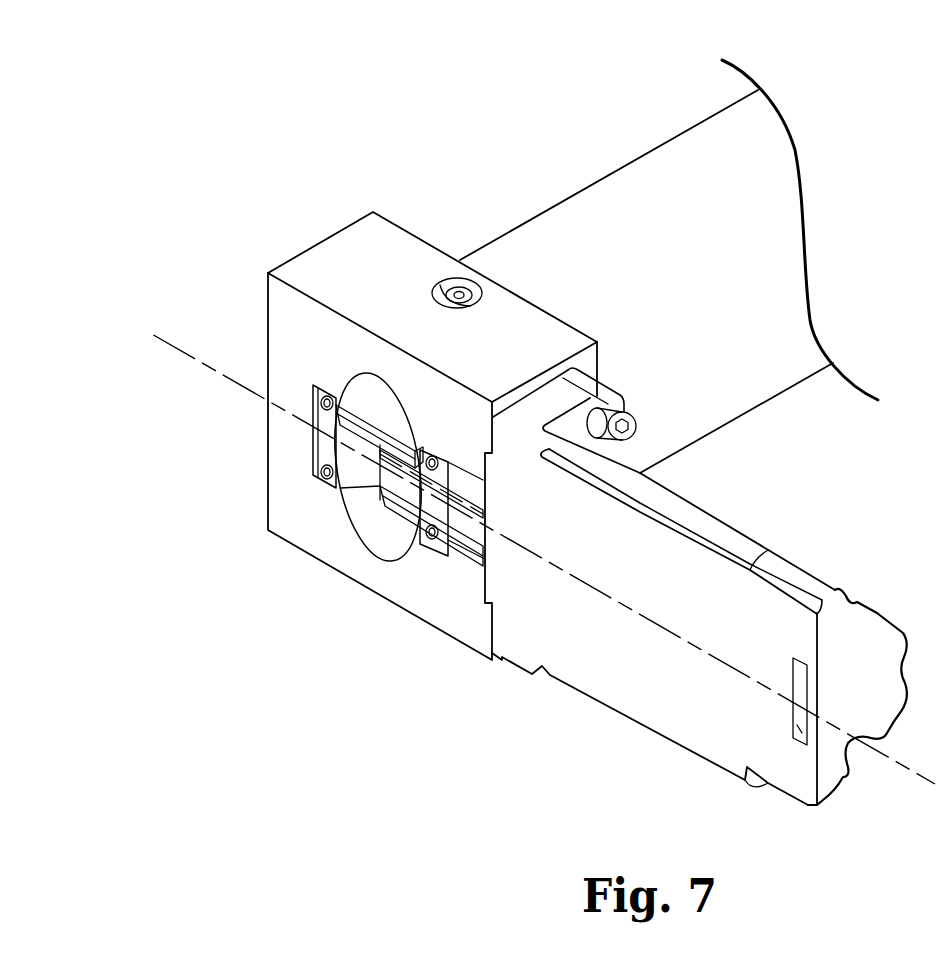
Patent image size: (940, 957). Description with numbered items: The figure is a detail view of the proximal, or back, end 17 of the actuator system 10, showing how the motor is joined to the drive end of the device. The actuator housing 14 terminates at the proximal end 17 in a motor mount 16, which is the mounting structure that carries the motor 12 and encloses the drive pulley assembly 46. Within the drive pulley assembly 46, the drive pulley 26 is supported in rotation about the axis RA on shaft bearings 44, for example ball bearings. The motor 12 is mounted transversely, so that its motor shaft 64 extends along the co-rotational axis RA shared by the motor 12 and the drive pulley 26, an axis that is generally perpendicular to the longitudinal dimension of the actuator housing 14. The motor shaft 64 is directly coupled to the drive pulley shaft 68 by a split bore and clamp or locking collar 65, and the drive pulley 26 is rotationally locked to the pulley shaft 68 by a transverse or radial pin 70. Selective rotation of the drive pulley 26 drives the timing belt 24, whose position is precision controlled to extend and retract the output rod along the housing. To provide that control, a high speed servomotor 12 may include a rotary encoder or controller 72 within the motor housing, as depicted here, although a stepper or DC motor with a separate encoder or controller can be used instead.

The actuator system 10 is at (275, 90).
The motor 12 is at (794, 567).
The actuator housing 14 is at (795, 387).
The motor mount 16 is at (362, 235).
The proximal end 17 is at (488, 80).
The timing belt 24 is at (393, 413).
The drive pulley 26 is at (340, 490).
The shaft bearings 44 is at (323, 478).
The drive pulley assembly 46 is at (300, 405).
The motor shaft 64 is at (413, 520).
The locking collar 65 is at (468, 543).
The drive pulley shaft 68 is at (323, 445).
The radial pin 70 is at (370, 503).
The rotary encoder or controller 72 is at (793, 740).
The drive pulley axis RA is at (528, 546).